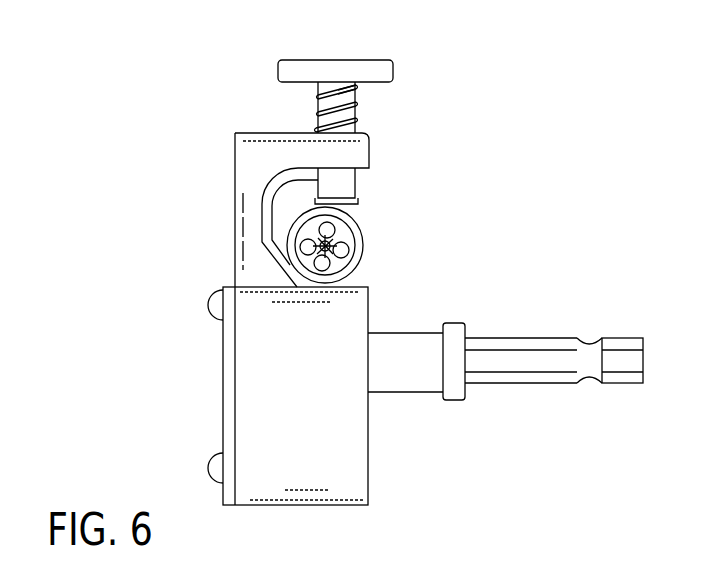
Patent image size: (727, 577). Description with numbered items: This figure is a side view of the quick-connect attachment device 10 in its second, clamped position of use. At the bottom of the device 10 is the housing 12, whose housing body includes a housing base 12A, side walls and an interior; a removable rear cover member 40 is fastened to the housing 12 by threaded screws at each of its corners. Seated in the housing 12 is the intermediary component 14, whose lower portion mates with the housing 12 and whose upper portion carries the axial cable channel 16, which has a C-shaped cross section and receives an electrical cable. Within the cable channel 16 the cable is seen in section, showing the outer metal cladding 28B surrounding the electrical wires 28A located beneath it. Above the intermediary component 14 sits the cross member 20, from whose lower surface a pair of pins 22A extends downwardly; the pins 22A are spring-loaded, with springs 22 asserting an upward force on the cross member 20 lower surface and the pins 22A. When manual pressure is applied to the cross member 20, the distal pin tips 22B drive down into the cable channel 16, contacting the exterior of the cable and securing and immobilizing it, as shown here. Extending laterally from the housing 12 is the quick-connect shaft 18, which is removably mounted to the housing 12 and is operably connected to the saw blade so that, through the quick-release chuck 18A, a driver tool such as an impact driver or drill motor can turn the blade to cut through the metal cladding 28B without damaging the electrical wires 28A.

The quick-connect attachment device 10 is at (504, 98).
The housing 12 is at (362, 478).
The housing base 12A is at (307, 533).
The intermediary component 14 is at (188, 319).
The cable channel 16 is at (290, 198).
The quick-connect shaft 18 is at (520, 338).
The quick-release chuck 18A is at (631, 313).
The cross member 20 is at (367, 58).
The springs 22 is at (317, 112).
The pins 22A is at (360, 103).
The distal pin tips 22B is at (513, 142).
The electrical wire 28A is at (343, 236).
The metal cladding 28B is at (358, 262).
The rear cover member 40 is at (227, 407).